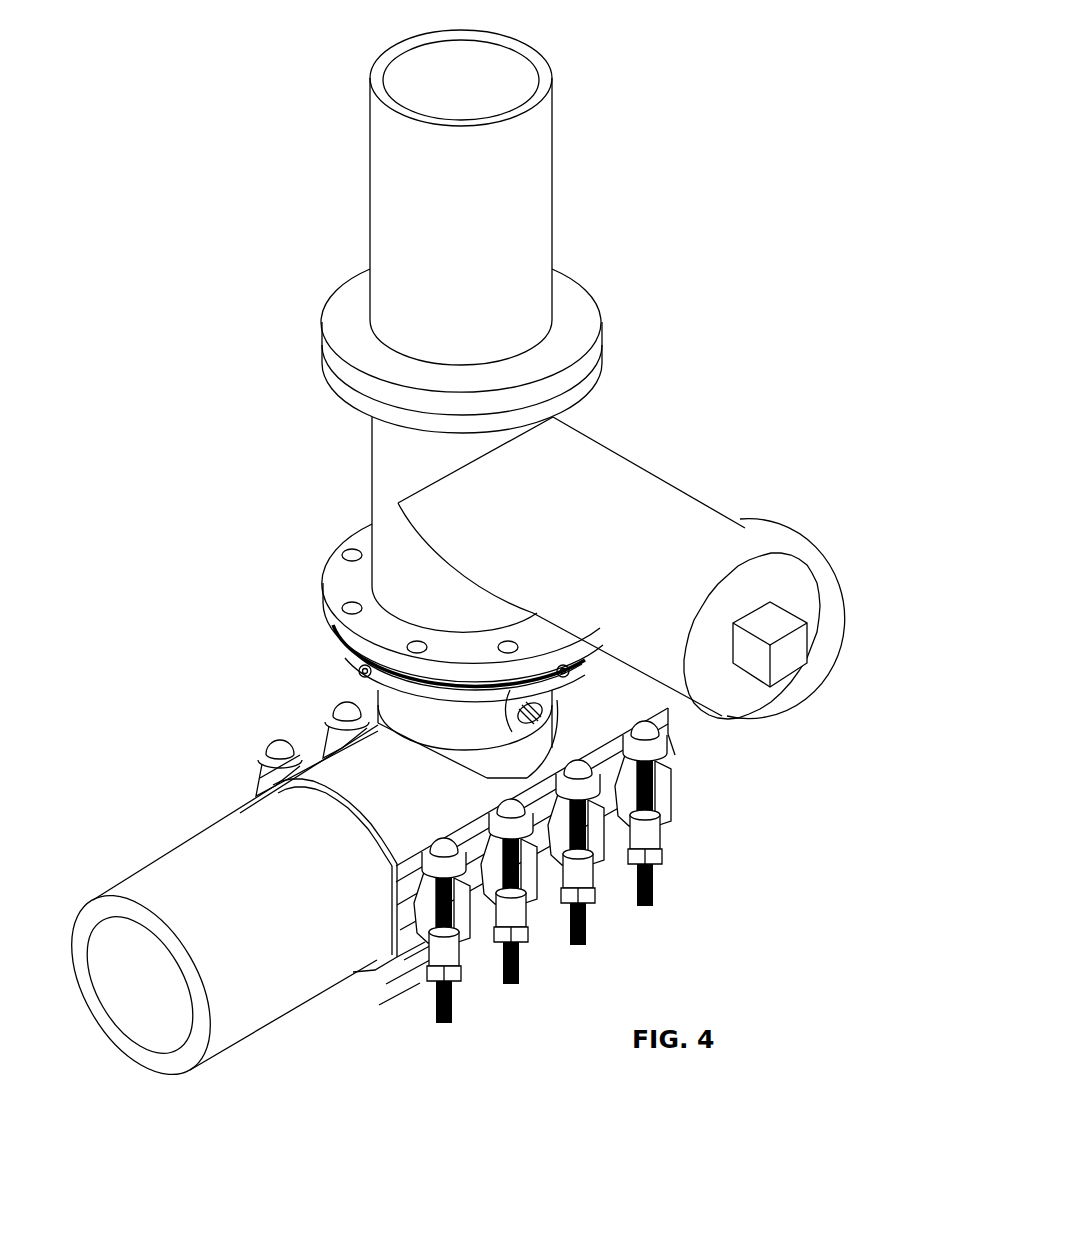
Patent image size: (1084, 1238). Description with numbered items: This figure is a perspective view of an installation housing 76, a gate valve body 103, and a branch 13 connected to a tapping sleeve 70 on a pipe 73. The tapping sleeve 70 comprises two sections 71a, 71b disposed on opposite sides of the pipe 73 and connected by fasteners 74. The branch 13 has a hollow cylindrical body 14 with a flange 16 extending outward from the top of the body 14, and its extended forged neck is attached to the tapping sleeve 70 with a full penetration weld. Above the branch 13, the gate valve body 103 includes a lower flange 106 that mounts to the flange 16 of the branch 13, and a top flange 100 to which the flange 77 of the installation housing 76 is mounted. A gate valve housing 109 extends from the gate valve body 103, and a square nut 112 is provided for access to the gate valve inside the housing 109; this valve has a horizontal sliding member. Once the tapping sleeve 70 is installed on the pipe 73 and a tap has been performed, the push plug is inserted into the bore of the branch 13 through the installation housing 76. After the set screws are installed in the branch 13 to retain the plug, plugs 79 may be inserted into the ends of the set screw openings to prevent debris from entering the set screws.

The branch 13 is at (318, 697).
The body 14 is at (465, 734).
The flange 16 is at (335, 642).
The tapping sleeve 70 is at (385, 919).
The section 71a is at (327, 768).
The section 71b is at (379, 1006).
The pipe 73 is at (266, 916).
The fasteners 74 is at (267, 752).
The installation housing 76 is at (492, 213).
The flange 77 is at (354, 331).
The plugs 79 is at (357, 671).
The top flange 100 is at (348, 383).
The gate valve body 103 is at (386, 472).
The lower flange 106 is at (344, 577).
The gate valve housing 109 is at (614, 497).
The square nut 112 is at (770, 625).